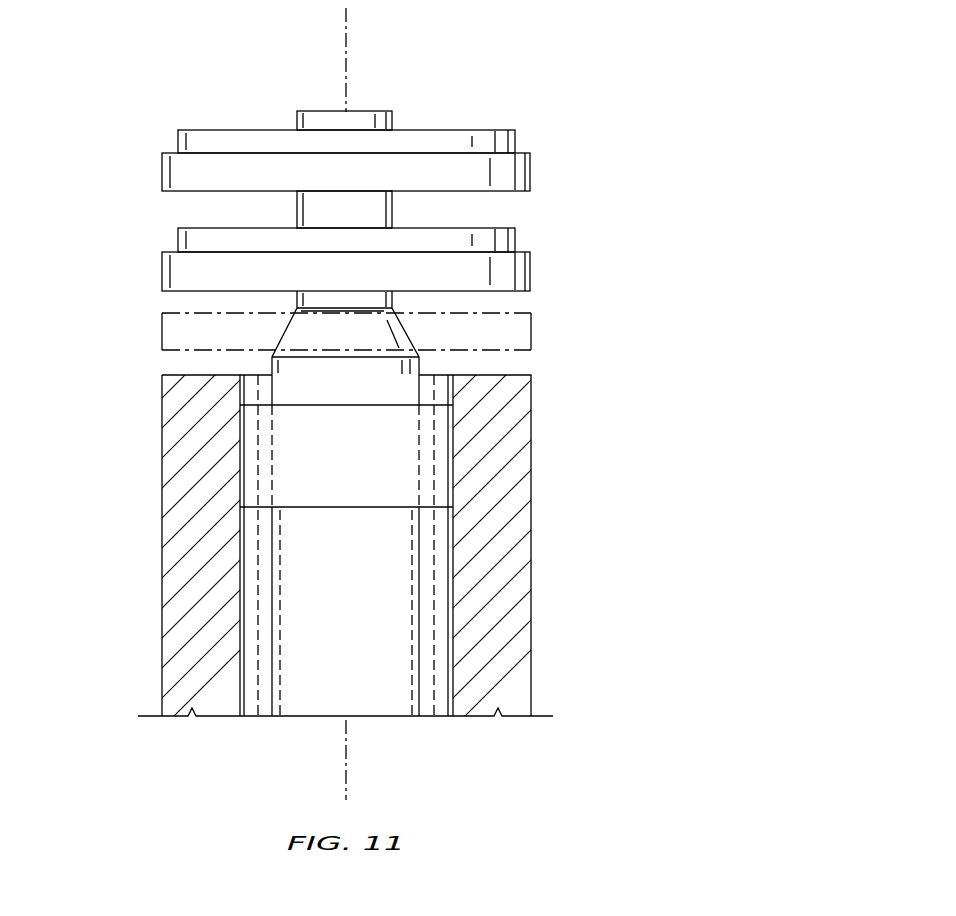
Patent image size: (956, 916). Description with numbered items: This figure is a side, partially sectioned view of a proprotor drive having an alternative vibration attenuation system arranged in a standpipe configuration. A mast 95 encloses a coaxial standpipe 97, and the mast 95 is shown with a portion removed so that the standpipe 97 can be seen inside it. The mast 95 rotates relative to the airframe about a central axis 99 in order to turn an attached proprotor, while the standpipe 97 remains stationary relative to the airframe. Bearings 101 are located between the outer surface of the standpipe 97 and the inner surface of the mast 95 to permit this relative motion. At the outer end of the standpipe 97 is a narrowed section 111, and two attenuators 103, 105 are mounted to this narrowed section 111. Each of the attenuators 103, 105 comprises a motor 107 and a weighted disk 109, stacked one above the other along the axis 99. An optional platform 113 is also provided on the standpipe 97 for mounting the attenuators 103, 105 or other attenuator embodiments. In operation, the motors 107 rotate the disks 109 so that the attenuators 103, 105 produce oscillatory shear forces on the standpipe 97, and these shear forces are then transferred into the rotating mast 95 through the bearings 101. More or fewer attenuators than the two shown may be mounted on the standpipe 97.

The mast 95 is at (531, 545).
The standpipe 97 is at (432, 702).
The axis 99 is at (346, 44).
The bearings 101 is at (347, 508).
The attenuator 103 is at (162, 172).
The attenuator 105 is at (162, 272).
The motor 107 is at (515, 140).
The weighted disk 109 is at (530, 172).
The narrowed section 111 is at (296, 213).
The platform 113 is at (533, 333).